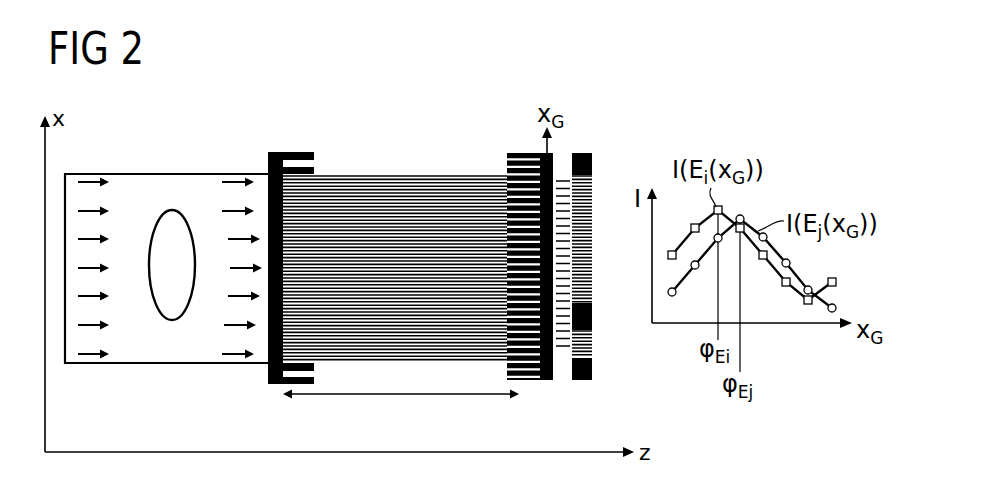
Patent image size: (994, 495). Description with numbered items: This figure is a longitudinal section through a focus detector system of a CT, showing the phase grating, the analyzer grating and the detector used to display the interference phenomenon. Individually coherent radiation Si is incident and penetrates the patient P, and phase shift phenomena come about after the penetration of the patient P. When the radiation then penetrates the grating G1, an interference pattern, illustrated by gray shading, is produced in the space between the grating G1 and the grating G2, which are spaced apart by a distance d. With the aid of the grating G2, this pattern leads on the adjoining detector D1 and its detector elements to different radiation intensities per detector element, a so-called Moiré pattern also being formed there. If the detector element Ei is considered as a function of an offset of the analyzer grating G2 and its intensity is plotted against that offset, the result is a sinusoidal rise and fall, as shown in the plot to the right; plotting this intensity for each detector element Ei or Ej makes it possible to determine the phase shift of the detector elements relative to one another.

The X-ray source / incident radiation Si is at (84, 181).
The patient P is at (171, 209).
The phase grating G1 is at (280, 151).
The analyzer grating G2 is at (515, 152).
The detector D1 is at (612, 227).
The detector element Ei is at (592, 190).
The detector element Ej is at (592, 297).
The distance between gratings d is at (392, 397).